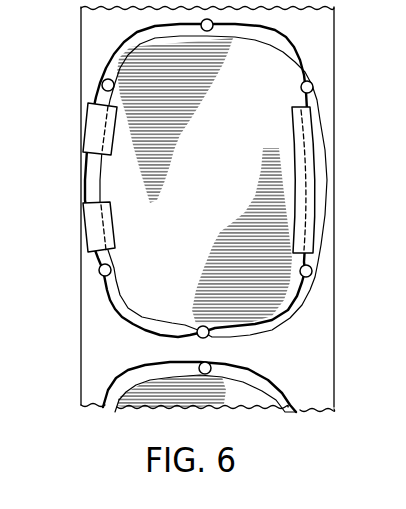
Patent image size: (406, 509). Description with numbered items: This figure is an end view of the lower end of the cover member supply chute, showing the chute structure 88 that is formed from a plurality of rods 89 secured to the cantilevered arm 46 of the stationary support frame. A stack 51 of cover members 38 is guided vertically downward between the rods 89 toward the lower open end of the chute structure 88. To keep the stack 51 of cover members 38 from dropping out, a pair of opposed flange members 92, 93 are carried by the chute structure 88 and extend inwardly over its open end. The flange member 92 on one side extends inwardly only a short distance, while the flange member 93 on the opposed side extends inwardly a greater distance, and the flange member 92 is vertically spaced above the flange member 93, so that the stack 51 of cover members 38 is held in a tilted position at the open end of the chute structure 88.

The cantilevered arm 46 is at (97, 22).
The cover members 38 is at (140, 68).
The stack 51 is at (258, 84).
The chute structure 88 is at (111, 308).
The rods 89 is at (313, 87).
The flange member 92 is at (95, 120).
The flange member 93 is at (306, 152).